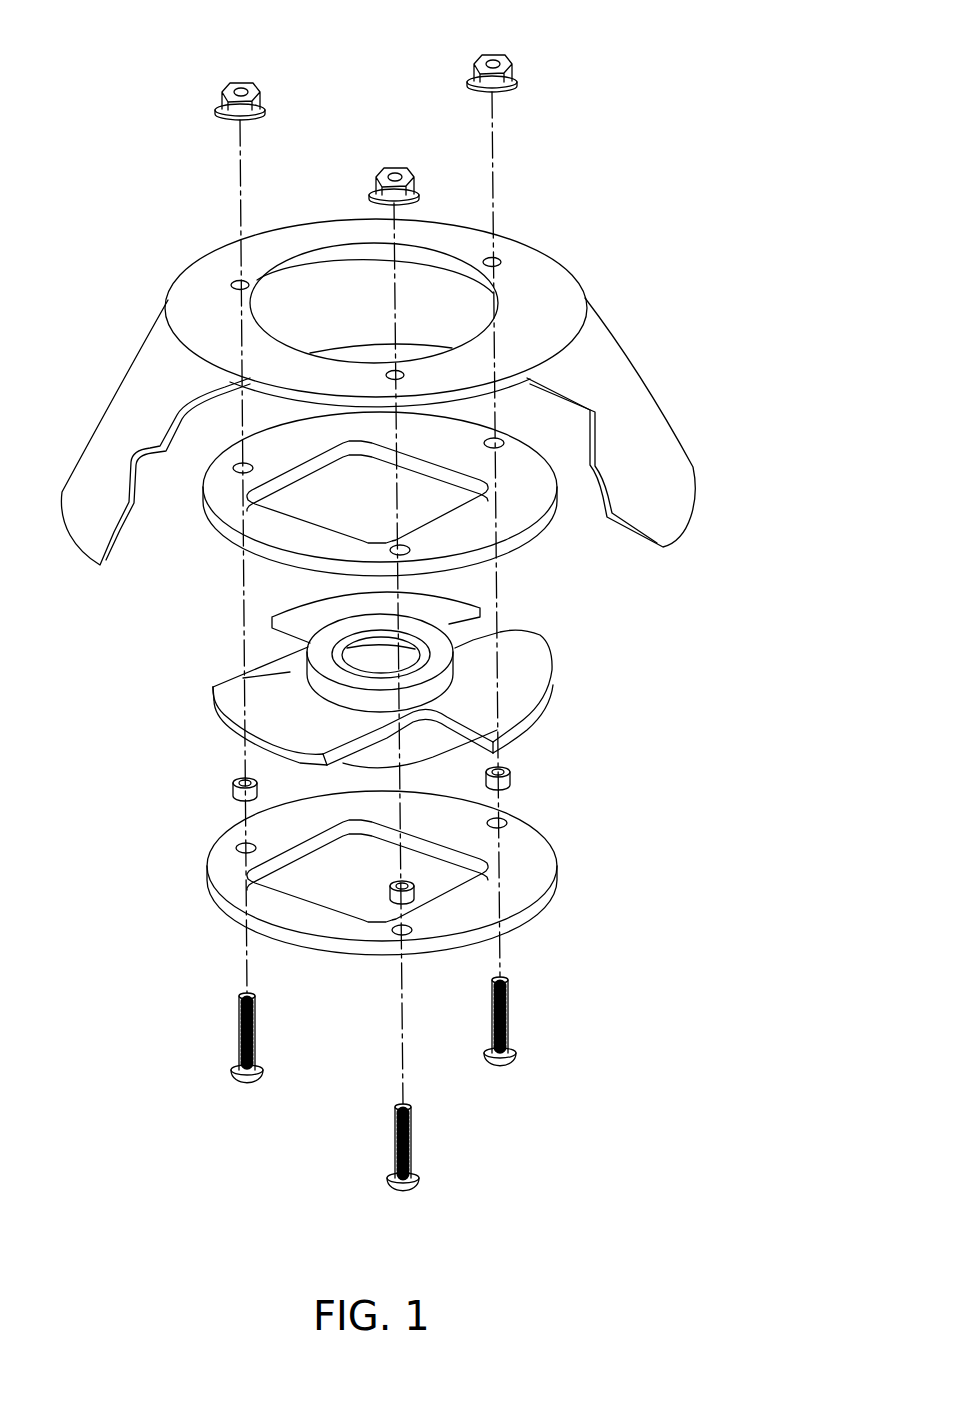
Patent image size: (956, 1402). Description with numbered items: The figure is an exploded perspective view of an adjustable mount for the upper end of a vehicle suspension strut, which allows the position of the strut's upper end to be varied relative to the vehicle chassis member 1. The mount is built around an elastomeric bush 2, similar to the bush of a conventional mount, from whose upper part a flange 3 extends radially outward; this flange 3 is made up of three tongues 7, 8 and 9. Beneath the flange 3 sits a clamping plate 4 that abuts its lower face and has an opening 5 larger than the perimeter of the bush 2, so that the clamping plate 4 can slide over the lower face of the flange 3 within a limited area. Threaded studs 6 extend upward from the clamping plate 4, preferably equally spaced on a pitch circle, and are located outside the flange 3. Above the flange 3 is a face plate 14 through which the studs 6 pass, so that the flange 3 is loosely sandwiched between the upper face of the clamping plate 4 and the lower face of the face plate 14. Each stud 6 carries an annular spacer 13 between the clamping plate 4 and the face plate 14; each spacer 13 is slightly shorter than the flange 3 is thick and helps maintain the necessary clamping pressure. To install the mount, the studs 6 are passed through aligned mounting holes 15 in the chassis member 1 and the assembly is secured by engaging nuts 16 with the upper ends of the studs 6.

The vehicle chassis member 1 is at (556, 300).
The elastomeric bush 2 is at (444, 653).
The flange 3 is at (240, 677).
The clamping plate 4 is at (540, 868).
The opening 5 is at (248, 877).
The threaded studs 6 is at (238, 1030).
The tongue 7 is at (237, 708).
The tongue 8 is at (305, 612).
The tongue 9 is at (515, 690).
The annular spacer 13 is at (232, 787).
The face plate 14 is at (512, 515).
The mounting holes 15 is at (238, 280).
The nuts 16 is at (510, 60).